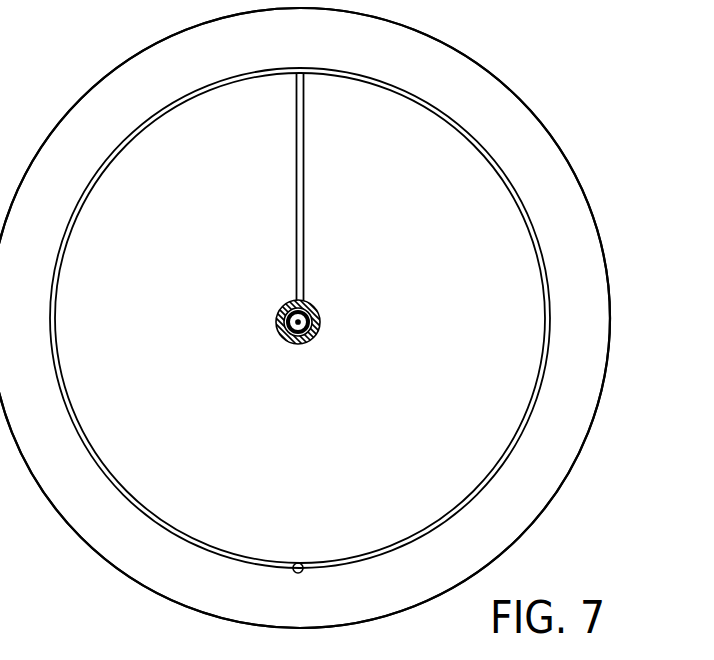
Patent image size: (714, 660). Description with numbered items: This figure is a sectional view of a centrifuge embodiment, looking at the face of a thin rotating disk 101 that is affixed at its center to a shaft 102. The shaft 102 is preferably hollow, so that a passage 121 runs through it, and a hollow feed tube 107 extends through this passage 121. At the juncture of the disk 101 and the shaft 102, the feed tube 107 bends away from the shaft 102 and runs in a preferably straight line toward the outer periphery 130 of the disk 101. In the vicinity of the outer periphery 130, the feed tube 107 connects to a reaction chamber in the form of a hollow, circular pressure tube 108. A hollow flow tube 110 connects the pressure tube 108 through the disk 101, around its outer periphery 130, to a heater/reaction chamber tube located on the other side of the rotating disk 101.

The outer periphery 130 is at (165, 40).
The rotating disk 101 is at (502, 82).
The pressure tube 108 is at (533, 230).
The feed tube 107 is at (305, 213).
The shaft 102 is at (320, 312).
The passage 121 is at (303, 332).
The flow tube 110 is at (300, 572).